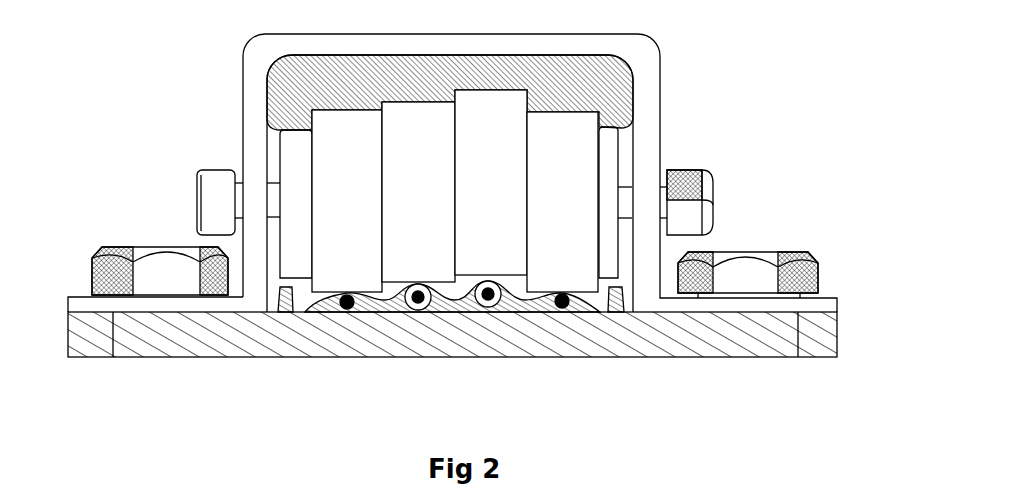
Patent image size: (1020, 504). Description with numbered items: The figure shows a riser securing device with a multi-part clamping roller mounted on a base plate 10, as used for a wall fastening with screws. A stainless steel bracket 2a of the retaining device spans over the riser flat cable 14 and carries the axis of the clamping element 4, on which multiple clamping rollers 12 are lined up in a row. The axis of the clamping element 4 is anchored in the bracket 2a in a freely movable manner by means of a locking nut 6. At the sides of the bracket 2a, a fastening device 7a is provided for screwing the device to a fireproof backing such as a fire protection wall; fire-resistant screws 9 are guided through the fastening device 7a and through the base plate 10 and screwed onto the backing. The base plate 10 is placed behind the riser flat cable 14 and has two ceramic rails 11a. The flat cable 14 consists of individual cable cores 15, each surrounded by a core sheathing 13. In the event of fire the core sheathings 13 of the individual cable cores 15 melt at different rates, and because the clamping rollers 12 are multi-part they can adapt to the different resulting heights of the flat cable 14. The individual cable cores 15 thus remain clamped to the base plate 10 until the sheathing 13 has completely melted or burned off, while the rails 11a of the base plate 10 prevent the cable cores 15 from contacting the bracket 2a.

The stainless steel bracket 2a is at (252, 73).
The clamping rollers 12 is at (570, 143).
The locking nut 6 is at (689, 176).
The axis of the clamping element 4 is at (242, 192).
The fire-resistant screws 9 is at (150, 260).
The fastening device 7a is at (82, 300).
The base plate 10 is at (128, 348).
The ceramic rails 11a is at (283, 310).
The riser flat cable 14 is at (383, 307).
The cable cores 15 is at (480, 308).
The core sheathings 13 is at (490, 300).